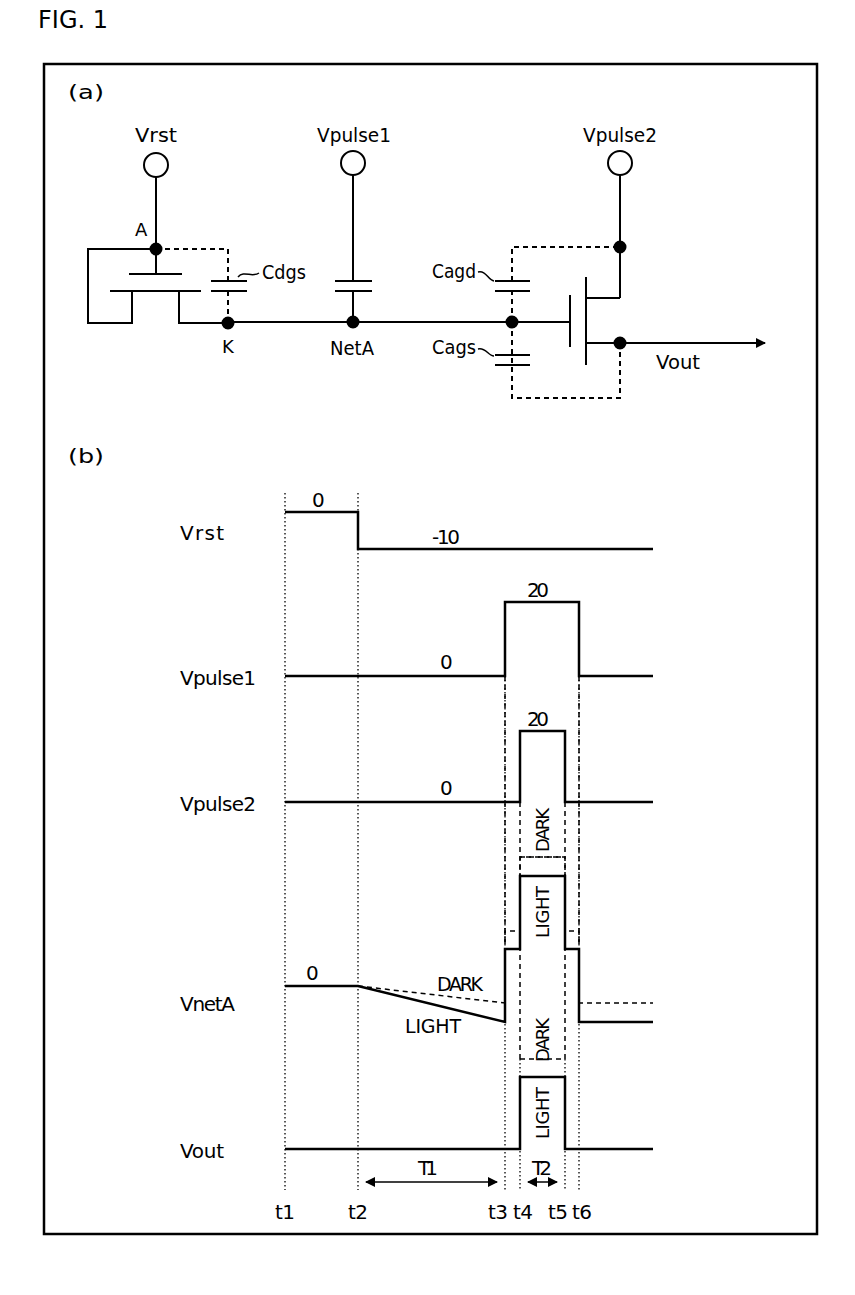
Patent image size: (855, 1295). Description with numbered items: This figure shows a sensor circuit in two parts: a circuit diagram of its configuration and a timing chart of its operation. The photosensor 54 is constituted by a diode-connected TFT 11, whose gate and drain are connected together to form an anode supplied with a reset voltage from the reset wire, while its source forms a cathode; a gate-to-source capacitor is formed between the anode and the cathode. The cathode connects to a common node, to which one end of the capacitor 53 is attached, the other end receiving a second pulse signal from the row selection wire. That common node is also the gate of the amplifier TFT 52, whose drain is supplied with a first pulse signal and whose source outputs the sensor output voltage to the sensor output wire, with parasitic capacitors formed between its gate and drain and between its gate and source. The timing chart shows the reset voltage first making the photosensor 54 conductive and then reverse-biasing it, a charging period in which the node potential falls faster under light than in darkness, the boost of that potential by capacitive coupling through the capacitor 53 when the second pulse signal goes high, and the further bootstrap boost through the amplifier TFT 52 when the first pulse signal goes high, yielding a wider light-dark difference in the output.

The TFT 11 is at (122, 290).
The amplifier TFT 52 is at (588, 291).
The capacitor 53 is at (370, 274).
The photosensor 54 is at (141, 315).